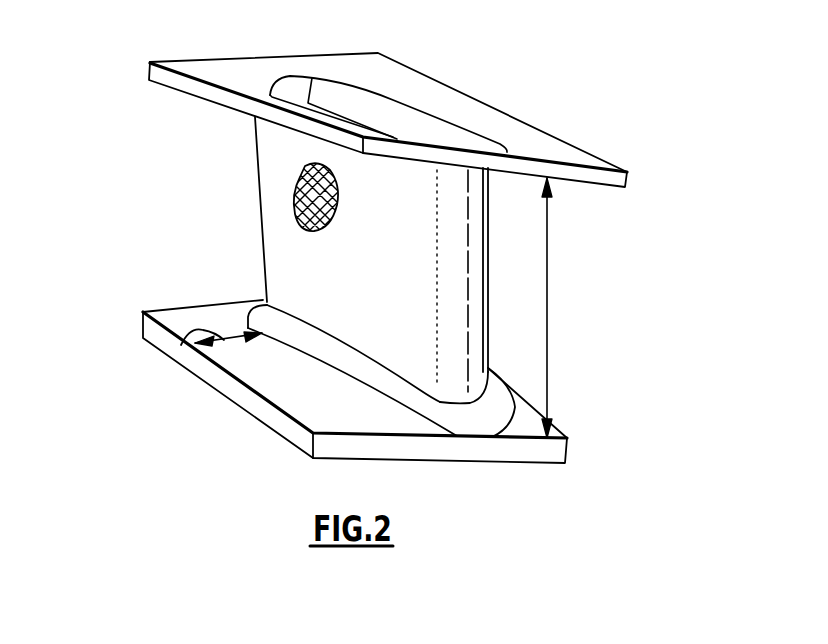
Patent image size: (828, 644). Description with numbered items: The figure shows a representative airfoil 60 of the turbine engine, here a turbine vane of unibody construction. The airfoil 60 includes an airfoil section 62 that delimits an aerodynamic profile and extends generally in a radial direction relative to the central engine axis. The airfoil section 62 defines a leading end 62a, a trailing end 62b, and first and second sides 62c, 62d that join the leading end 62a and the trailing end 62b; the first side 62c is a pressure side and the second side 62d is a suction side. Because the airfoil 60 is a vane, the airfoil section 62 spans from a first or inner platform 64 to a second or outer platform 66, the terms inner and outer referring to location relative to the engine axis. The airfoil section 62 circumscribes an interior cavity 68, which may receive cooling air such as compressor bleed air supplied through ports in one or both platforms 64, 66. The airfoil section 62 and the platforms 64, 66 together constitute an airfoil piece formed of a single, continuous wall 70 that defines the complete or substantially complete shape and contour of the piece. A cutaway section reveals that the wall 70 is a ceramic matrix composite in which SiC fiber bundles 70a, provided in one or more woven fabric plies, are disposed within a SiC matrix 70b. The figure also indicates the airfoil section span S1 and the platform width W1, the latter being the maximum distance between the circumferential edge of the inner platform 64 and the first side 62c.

The airfoil 60 is at (140, 253).
The airfoil section 62 is at (212, 117).
The leading end 62a is at (471, 267).
The trailing end 62b is at (257, 140).
The first side 62c is at (422, 328).
The second side 62d is at (487, 208).
The inner platform 64 is at (568, 450).
The outer platform 66 is at (628, 182).
The interior cavity 68 is at (342, 113).
The wall 70 is at (176, 90).
The SiC fiber bundles 70a is at (297, 198).
The SiC matrix 70b is at (300, 216).
The platform width W1 is at (181, 344).
The airfoil section span S1 is at (547, 295).